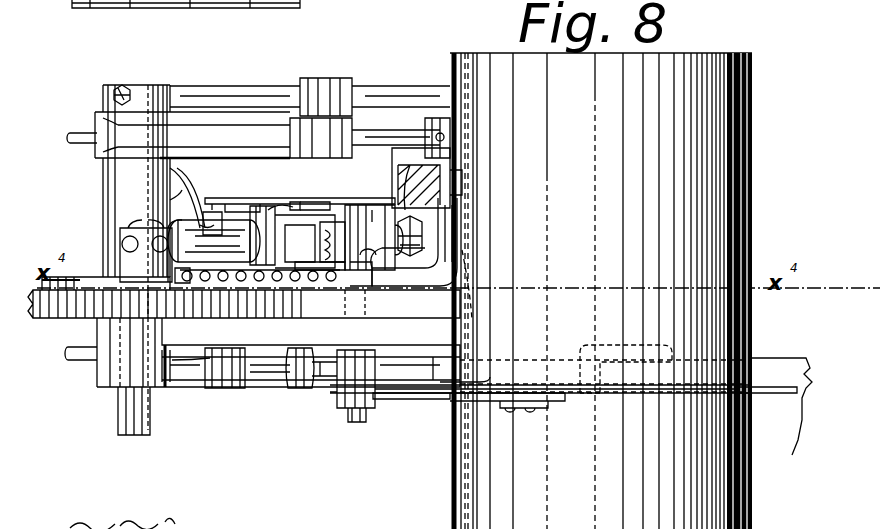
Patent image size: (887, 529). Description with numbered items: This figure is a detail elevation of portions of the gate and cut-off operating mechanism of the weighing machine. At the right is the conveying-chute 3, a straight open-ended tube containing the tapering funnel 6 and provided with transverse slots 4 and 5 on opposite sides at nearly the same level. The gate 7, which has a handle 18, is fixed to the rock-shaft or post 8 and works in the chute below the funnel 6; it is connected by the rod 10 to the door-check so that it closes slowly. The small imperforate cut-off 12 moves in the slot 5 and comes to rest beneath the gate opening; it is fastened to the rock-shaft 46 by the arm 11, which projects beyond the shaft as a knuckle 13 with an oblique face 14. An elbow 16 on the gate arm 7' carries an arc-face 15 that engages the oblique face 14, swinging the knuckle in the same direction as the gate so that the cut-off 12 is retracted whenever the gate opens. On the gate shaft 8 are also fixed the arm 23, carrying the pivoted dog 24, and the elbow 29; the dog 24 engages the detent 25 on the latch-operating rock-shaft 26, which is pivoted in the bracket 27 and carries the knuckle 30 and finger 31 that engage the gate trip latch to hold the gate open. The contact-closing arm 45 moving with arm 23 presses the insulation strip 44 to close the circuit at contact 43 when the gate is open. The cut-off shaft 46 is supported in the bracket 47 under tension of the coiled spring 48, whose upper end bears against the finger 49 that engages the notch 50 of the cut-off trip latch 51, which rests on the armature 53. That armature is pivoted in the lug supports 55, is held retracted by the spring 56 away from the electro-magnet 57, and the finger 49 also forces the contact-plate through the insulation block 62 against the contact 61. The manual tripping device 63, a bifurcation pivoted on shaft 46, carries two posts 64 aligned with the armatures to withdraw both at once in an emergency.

The conveying-chute 3 is at (601, 291).
The slot 4 is at (755, 392).
The slot 5 is at (446, 402).
The funnel 6 is at (490, 294).
The gate 7 is at (472, 381).
The arm of the gate 7' is at (425, 353).
The rock-shaft 8 is at (120, 430).
The rod 10 is at (605, 344).
The arm 11 is at (458, 384).
The cut-off 12 is at (452, 398).
The knuckle 13 is at (326, 374).
The oblique face 14 is at (301, 354).
The arc-face 15 is at (222, 386).
The elbow 16 is at (190, 384).
The handle 18 is at (792, 456).
The arm 23 is at (266, 136).
The dog 24 is at (378, 137).
The detent 25 is at (445, 130).
The rock-shaft 26 is at (399, 190).
The bracket 27 is at (421, 177).
The elbow 29 is at (226, 98).
The knuckle 30 is at (330, 88).
The finger 31 is at (430, 193).
The spring contact point 43 is at (270, 206).
The strip of insulation 44 is at (205, 230).
The contact-closing arm 45 is at (170, 194).
The rock-shaft 46 is at (355, 422).
The bracket 47 is at (374, 237).
The spring 48 is at (341, 283).
The finger 49 is at (316, 200).
The notch 50 is at (290, 201).
The cut-off trip latch 51 is at (297, 237).
The armature 53 is at (174, 280).
The lug supports 55 is at (213, 282).
The spring 56 is at (166, 255).
The electro-magnet 57 is at (214, 241).
The contact-point 61 is at (370, 230).
The block of insulation 62 is at (310, 273).
The manual tripping device 63 is at (239, 206).
The posts 64 is at (226, 212).